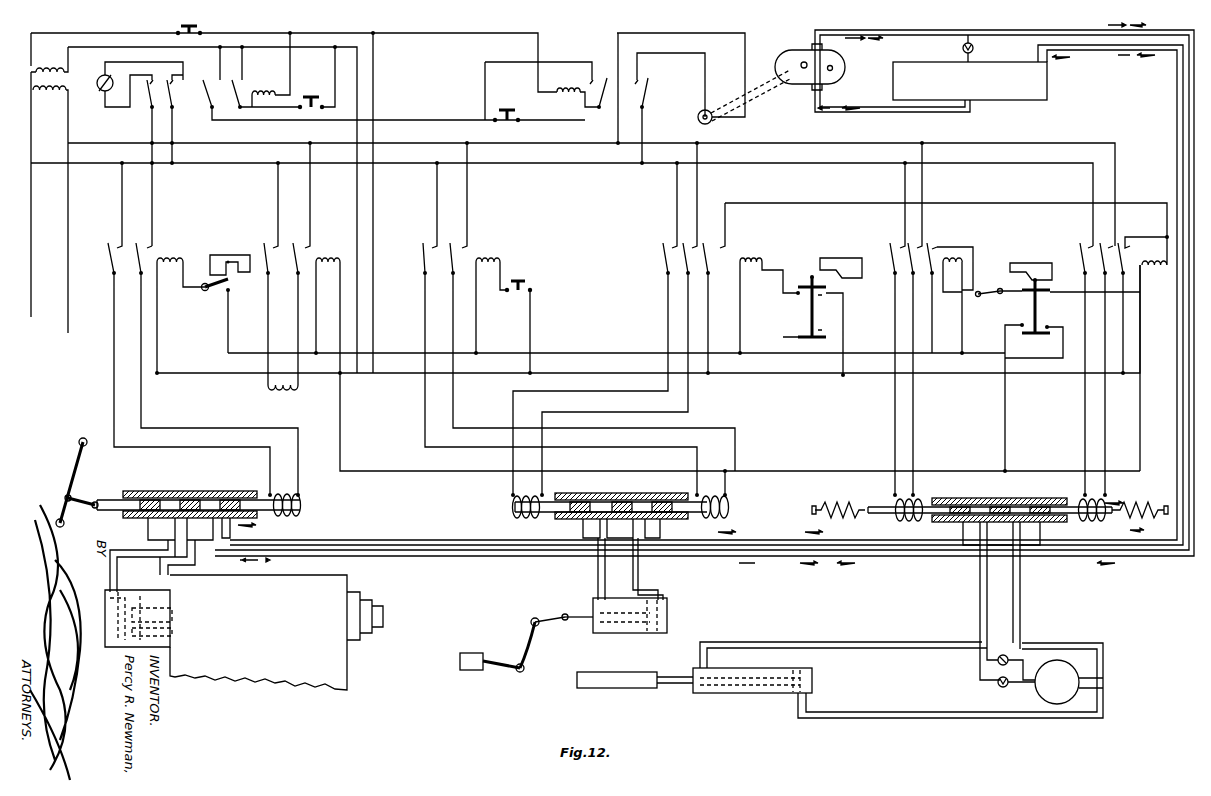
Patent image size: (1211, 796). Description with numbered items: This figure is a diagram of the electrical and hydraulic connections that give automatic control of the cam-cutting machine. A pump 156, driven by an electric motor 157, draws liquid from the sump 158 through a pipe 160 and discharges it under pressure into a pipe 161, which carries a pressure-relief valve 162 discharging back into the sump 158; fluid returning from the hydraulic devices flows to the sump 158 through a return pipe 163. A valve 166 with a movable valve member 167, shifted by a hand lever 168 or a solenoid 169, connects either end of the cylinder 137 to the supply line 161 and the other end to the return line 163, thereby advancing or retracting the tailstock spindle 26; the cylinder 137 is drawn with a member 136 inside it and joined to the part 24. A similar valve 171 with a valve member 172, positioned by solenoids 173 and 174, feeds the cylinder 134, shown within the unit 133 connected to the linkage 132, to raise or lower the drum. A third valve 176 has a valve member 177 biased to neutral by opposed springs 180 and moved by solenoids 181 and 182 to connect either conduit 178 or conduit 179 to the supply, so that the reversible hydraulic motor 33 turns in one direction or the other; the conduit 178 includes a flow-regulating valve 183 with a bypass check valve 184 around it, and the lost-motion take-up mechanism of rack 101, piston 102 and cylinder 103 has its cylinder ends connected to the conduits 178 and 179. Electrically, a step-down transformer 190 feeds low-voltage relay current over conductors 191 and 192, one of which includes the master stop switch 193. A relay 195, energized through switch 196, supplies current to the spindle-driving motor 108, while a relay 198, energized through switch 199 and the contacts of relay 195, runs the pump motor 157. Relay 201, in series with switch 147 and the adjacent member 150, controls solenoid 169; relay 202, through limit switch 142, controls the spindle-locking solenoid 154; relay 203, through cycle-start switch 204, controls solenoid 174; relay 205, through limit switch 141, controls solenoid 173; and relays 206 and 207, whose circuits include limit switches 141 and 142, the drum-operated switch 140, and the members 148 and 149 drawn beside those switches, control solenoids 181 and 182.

The step-down transformer 190 is at (49, 183).
The conductor 191 is at (100, 33).
The conductor 192 is at (354, 208).
The master stop switch 193 is at (200, 31).
The spindle-driving motor 108 is at (101, 93).
The relay 195 is at (265, 91).
The switch 196 is at (320, 95).
The relay 198 is at (572, 97).
The switch 199 is at (507, 121).
The electric motor 157 is at (706, 124).
The pump 156 is at (803, 88).
The pipe 161 is at (882, 22).
The pressure-relief valve 162 is at (962, 48).
The sump 158 is at (970, 81).
The return pipe 163 is at (1117, 52).
The pipe 160 is at (938, 113).
The relay 201 is at (167, 251).
The relay 202 is at (318, 254).
The switch 147 is at (212, 297).
The contact block 150 is at (232, 296).
The solenoid 154 is at (285, 398).
The relay 203 is at (478, 252).
The cycle-start switch 204 is at (533, 283).
The relay 205 is at (750, 257).
The cam 148 is at (848, 257).
The relay 206 is at (962, 258).
The cam 149 is at (1042, 262).
The switch 140 is at (995, 283).
The switch 141 is at (814, 326).
The switch 142 is at (684, 375).
The relay 207 is at (1160, 273).
The hand lever 168 is at (83, 438).
The valve member 167 is at (133, 492).
The valve 166 is at (200, 491).
The solenoid 169 is at (296, 514).
The valve 171 is at (625, 496).
The valve member 172 is at (510, 504).
The solenoid 173 is at (518, 516).
The solenoid 174 is at (730, 513).
The springs 180 is at (846, 502).
The valve member 177 is at (945, 500).
The valve 176 is at (1046, 499).
The solenoid 181 is at (896, 519).
The solenoid 182 is at (1100, 520).
The conduit 178 is at (980, 607).
The conduit 179 is at (1022, 611).
The check valve 184 is at (1004, 654).
The flow-regulating valve 183 is at (1000, 688).
The hydraulic motor 33 is at (1072, 690).
The cylinder 137 is at (110, 590).
The piston 136 is at (138, 595).
The hydraulic cylinder 24 is at (258, 632).
The tailstock spindle 26 is at (370, 645).
The cylinder 133 is at (669, 620).
The cylinder 134 is at (645, 633).
The lever 132 is at (532, 656).
The rack 101 is at (636, 683).
The cylinder 103 is at (750, 694).
The piston 102 is at (796, 694).